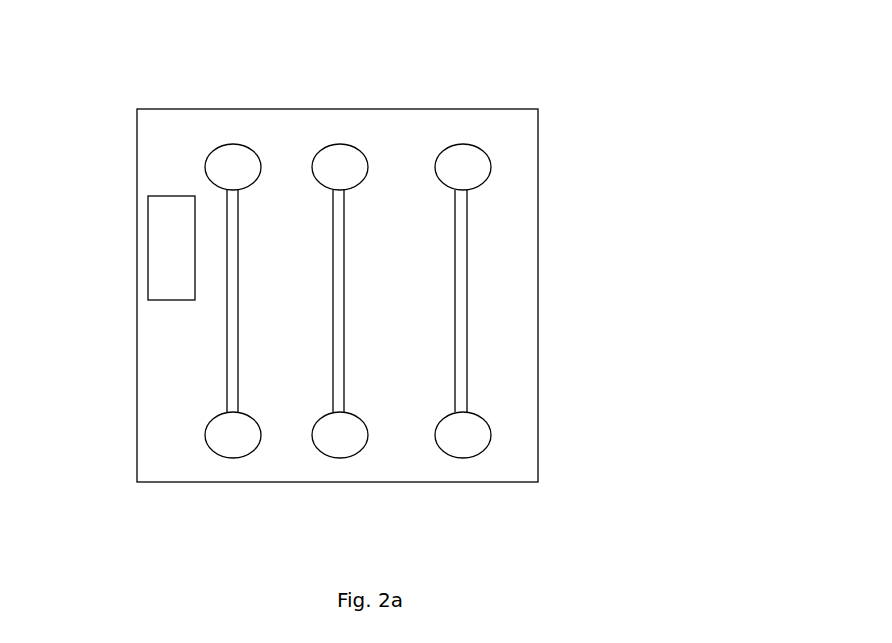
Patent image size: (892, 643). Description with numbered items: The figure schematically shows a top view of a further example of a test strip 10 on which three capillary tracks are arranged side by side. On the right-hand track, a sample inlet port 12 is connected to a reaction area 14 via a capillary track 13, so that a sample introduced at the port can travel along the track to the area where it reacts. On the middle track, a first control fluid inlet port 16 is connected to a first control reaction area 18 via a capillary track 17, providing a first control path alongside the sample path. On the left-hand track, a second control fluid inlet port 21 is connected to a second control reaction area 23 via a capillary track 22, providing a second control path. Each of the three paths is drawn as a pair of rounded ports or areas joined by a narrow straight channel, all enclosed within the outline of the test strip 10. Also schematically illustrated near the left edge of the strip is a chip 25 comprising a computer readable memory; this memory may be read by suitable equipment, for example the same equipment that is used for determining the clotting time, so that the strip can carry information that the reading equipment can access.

The test strip 10 is at (520, 127).
The sample inlet port 12 is at (453, 435).
The capillary track 13 is at (467, 353).
The reaction area 14 is at (462, 157).
The first control fluid inlet port 16 is at (332, 435).
The capillary track 17 is at (345, 397).
The first control reaction area 18 is at (340, 166).
The second control fluid inlet port 21 is at (225, 436).
The capillary track 22 is at (227, 335).
The second control reaction area 23 is at (232, 166).
The chip 25 is at (173, 248).